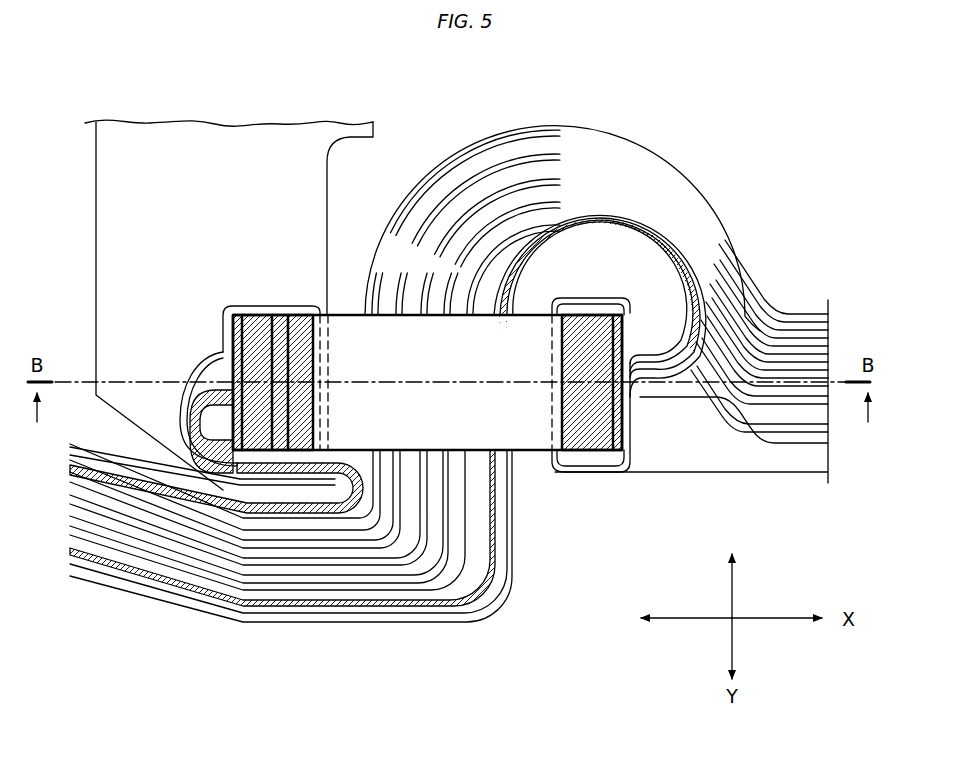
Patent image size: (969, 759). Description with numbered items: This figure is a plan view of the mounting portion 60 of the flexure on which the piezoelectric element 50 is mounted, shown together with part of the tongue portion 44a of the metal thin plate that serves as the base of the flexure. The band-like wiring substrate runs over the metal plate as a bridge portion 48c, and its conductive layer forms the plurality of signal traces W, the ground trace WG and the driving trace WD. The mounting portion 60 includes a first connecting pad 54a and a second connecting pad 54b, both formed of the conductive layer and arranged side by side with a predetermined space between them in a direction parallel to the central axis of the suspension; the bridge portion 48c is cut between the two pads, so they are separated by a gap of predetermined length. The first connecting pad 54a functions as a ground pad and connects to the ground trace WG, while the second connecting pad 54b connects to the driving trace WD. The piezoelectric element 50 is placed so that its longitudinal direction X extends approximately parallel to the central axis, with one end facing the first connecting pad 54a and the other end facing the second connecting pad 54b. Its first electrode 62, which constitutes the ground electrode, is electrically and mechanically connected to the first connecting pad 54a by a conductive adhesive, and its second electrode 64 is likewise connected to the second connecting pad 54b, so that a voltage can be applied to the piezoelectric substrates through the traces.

The tongue portion 44a is at (220, 142).
The piezoelectric element 50 is at (352, 333).
The first connecting pad 54a is at (258, 335).
The second connecting pad 54b is at (593, 447).
The mounting portion 60 is at (546, 490).
The first electrode 62 is at (225, 347).
The second electrode 64 is at (622, 425).
The bridge portion 48c is at (308, 628).
The signal trace W is at (703, 368).
The ground trace WG is at (217, 490).
The driving trace WD is at (175, 590).